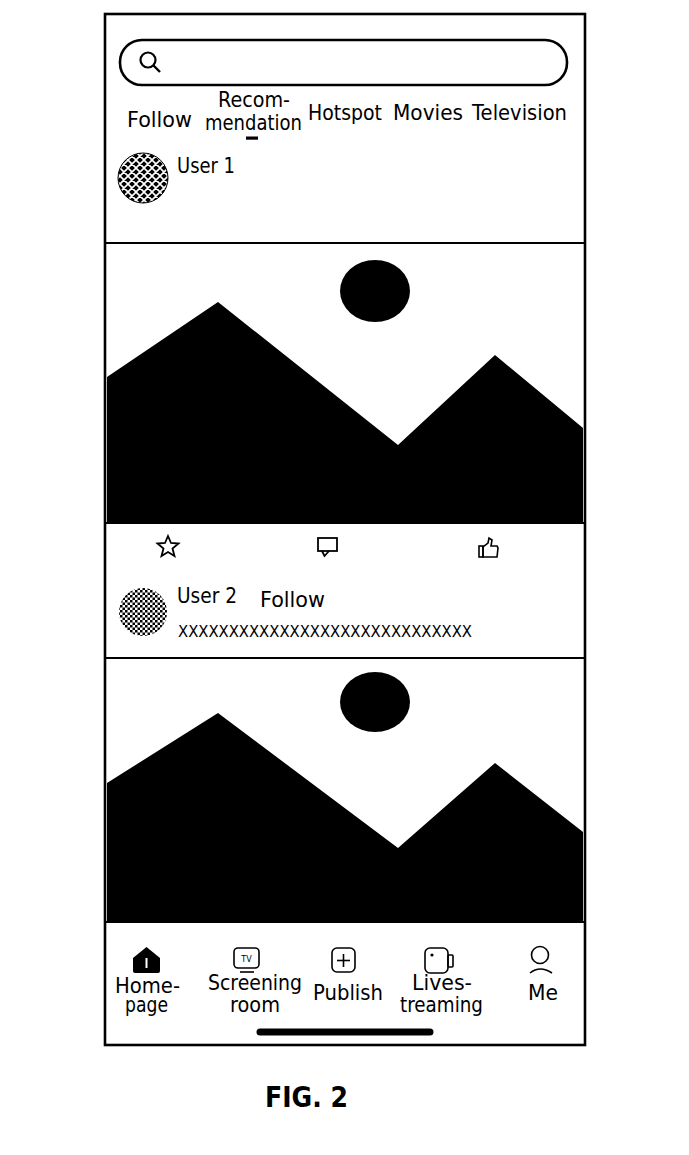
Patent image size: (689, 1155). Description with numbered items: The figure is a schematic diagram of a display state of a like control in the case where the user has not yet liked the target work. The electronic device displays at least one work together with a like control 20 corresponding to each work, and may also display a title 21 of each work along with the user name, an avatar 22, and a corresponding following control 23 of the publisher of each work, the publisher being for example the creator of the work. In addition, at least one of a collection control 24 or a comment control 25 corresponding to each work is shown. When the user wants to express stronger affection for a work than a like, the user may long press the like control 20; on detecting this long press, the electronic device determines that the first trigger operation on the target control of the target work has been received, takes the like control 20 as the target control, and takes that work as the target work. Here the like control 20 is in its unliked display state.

The like control 20 is at (490, 558).
The title 21 is at (428, 185).
The avatar 22 is at (122, 176).
The following control 23 is at (305, 157).
The collection control 24 is at (160, 551).
The comment control 25 is at (330, 553).